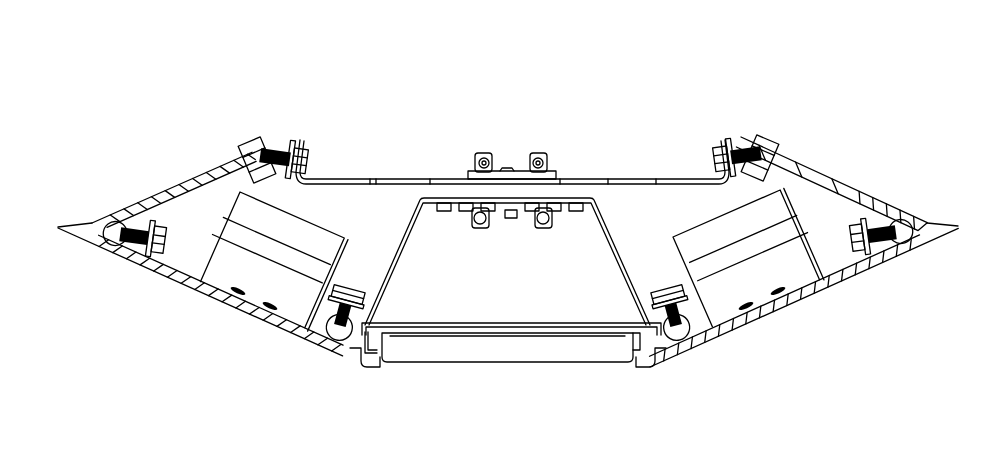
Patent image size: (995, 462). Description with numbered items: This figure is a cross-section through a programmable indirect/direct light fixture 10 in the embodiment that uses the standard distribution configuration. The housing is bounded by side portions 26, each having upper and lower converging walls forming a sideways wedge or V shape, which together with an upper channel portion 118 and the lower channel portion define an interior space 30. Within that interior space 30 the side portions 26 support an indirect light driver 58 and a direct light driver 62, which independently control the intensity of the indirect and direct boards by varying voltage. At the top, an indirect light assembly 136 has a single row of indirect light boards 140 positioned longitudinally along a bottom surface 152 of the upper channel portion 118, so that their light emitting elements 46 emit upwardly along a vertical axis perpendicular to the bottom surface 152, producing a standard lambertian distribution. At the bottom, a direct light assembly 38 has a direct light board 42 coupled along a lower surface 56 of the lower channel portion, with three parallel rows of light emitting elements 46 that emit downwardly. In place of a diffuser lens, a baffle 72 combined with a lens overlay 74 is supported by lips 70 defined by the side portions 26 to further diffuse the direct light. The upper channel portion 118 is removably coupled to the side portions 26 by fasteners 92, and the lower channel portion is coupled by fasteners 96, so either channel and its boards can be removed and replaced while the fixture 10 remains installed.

The light fixture 10 is at (141, 86).
The side portions 26 is at (98, 243).
The interior space 30 is at (182, 265).
The direct light assembly 38 is at (495, 388).
The direct light board 42 is at (497, 207).
The light emitting elements 46 is at (508, 163).
The lower surface 56 is at (507, 235).
The indirect light driver 58 is at (253, 287).
The direct light driver 62 is at (760, 283).
The lips 70 is at (363, 347).
The baffle 72 is at (403, 353).
The lens overlay 74 is at (448, 328).
The fasteners 92 is at (287, 143).
The fasteners 96 is at (668, 287).
The upper channel portion 118 is at (352, 175).
The indirect light assembly 136 is at (508, 157).
The indirect light boards 140 is at (548, 168).
The bottom surface 152 is at (398, 175).